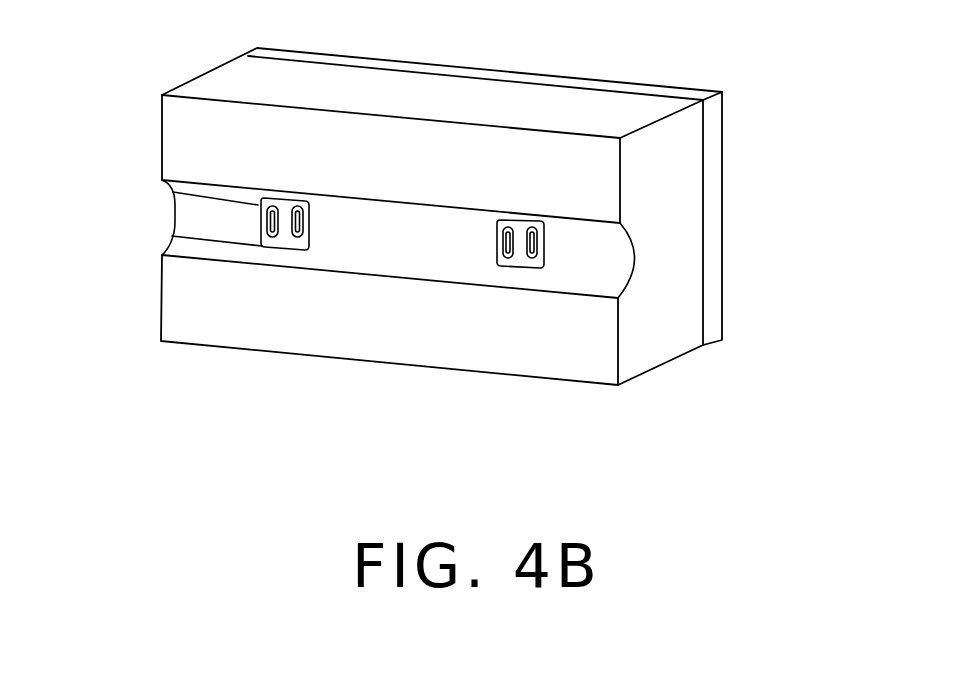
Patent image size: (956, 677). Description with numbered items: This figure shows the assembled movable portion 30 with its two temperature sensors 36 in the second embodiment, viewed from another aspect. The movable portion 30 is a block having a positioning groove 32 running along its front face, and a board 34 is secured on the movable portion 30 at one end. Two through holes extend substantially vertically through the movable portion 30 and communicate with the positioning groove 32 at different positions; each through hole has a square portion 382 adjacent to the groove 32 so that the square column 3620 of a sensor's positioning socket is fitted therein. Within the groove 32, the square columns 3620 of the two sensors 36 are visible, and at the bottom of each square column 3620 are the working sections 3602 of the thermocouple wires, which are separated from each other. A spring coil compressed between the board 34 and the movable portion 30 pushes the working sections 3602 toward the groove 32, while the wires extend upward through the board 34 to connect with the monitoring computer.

The movable portion 30 is at (655, 175).
The positioning groove 32 is at (606, 247).
The board 34 is at (710, 115).
The temperature sensor 36 is at (172, 192).
The square portion of through hole 382 is at (172, 238).
The working section 3602 is at (497, 263).
The square column 3620 is at (545, 270).